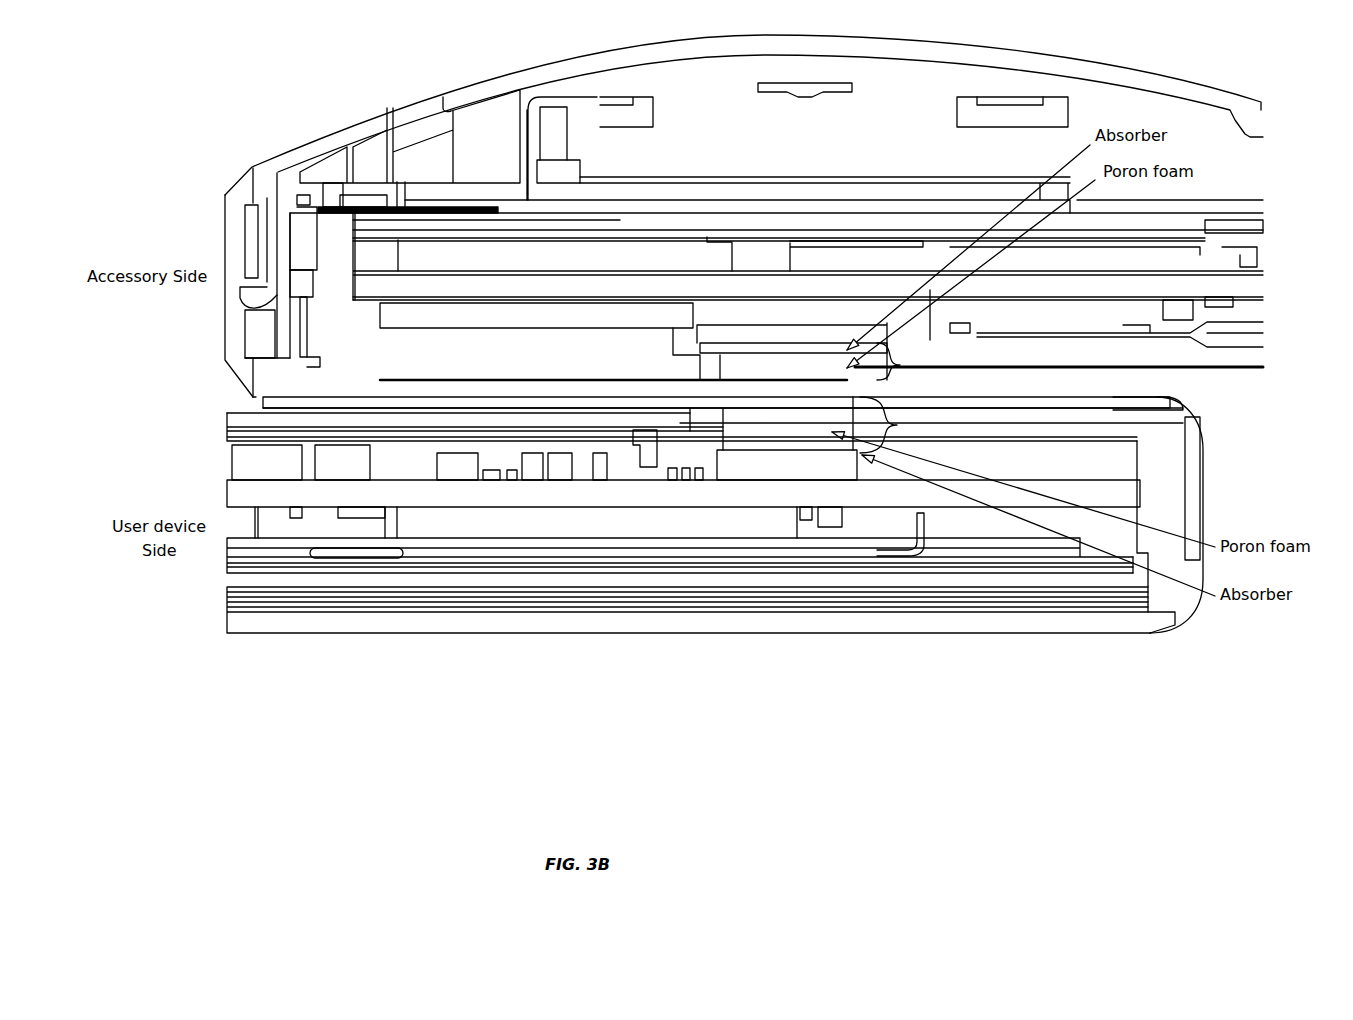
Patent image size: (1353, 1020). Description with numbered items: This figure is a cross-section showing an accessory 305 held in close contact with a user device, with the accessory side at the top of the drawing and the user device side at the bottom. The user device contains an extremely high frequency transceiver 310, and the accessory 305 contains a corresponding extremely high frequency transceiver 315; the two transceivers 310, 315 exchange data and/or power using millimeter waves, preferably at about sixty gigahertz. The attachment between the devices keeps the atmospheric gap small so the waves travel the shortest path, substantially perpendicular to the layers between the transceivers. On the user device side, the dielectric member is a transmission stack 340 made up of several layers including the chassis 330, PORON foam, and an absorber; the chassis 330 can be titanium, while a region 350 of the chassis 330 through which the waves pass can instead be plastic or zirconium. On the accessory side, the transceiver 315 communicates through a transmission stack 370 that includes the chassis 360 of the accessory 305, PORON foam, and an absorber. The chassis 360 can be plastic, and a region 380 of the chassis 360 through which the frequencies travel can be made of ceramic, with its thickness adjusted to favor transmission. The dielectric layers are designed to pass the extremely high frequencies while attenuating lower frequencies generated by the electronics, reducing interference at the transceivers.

The accessory 305 is at (223, 213).
The extremely high frequency transceiver 310 is at (755, 473).
The extremely high frequency transceiver 315 is at (740, 342).
The chassis 330 is at (577, 400).
The transmission stack 340 is at (897, 423).
The region 350 is at (837, 400).
The chassis 360 is at (320, 382).
The transmission stack 370 is at (900, 367).
The region 380 is at (837, 387).